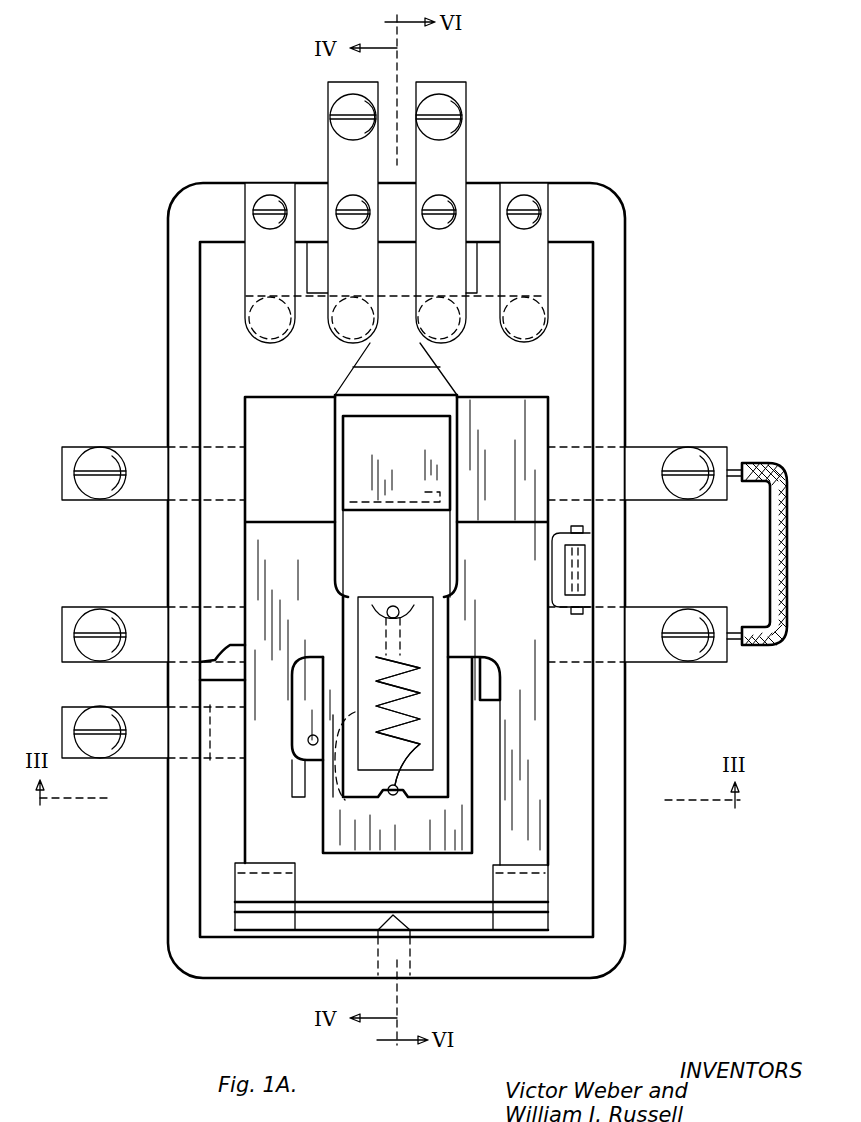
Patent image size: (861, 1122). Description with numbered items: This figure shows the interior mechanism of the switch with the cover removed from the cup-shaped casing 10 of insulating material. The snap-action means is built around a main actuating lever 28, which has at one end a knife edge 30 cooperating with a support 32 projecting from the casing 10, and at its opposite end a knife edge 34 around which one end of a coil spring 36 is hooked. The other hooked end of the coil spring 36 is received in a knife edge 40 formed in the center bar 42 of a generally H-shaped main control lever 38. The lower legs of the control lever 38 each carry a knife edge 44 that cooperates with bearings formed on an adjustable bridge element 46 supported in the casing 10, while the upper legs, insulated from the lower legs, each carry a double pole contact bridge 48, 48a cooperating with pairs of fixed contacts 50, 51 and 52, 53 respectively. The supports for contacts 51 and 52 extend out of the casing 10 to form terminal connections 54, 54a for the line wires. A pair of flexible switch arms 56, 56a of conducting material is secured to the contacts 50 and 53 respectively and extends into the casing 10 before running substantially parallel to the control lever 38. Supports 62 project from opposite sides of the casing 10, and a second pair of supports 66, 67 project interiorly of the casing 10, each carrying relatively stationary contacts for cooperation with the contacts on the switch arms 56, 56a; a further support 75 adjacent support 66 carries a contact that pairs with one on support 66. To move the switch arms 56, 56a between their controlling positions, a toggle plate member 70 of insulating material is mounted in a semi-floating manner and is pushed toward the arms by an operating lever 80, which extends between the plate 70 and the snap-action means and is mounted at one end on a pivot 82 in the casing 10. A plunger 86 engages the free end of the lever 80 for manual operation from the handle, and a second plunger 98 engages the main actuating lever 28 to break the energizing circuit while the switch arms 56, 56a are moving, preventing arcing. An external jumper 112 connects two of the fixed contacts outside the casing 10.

The casing 10 is at (625, 228).
The main actuating lever 28 is at (336, 520).
The knife edge 30 is at (440, 492).
The support 32 is at (440, 432).
The knife edge 34 is at (398, 797).
The coil spring 36 is at (420, 676).
The main control lever 38 is at (535, 742).
The knife edge 40 is at (400, 610).
The center bar 42 is at (368, 615).
The knife edge 44 is at (285, 863).
The adjustable bridge element 46 is at (548, 905).
The double pole contact bridge 48 is at (307, 335).
The double pole contact bridge 48a is at (485, 335).
The fixed contact 50 is at (275, 330).
The fixed contact 51 is at (353, 330).
The fixed contact 52 is at (415, 330).
The fixed contact 53 is at (527, 330).
The terminal connection 54 is at (335, 147).
The terminal connection 54a is at (450, 155).
The flexible switch arm 56 is at (305, 255).
The flexible switch arm 56a is at (488, 255).
The support 62 is at (130, 447).
The support 66 is at (148, 607).
The support 67 is at (712, 662).
The toggle plate member 70 is at (420, 845).
The support 75 is at (143, 707).
The operating lever 80 is at (318, 708).
The pivot 82 is at (590, 536).
The plunger 86 is at (310, 744).
The plunger 98 is at (340, 768).
The external jumper 112 is at (777, 465).